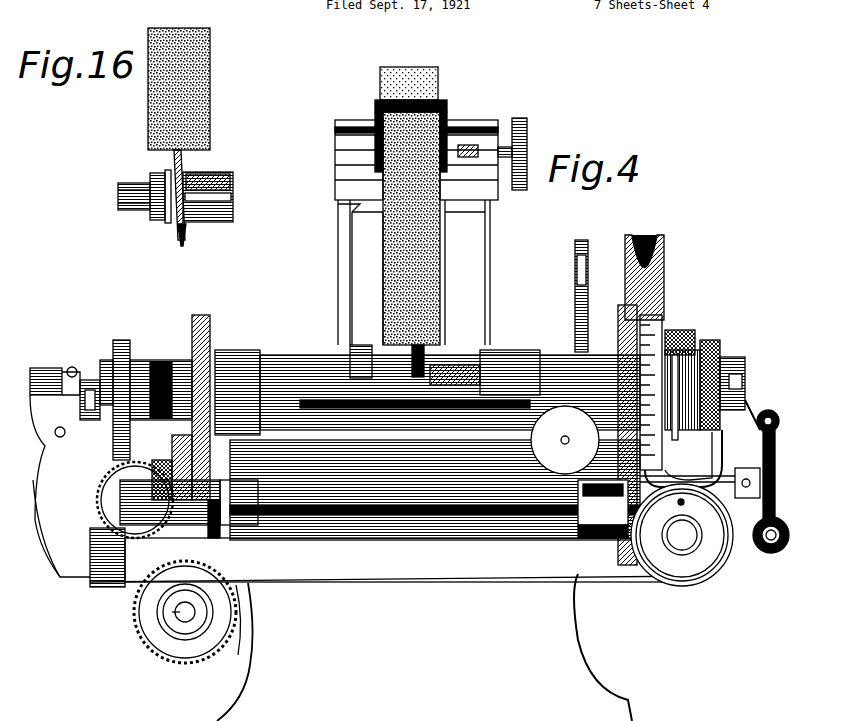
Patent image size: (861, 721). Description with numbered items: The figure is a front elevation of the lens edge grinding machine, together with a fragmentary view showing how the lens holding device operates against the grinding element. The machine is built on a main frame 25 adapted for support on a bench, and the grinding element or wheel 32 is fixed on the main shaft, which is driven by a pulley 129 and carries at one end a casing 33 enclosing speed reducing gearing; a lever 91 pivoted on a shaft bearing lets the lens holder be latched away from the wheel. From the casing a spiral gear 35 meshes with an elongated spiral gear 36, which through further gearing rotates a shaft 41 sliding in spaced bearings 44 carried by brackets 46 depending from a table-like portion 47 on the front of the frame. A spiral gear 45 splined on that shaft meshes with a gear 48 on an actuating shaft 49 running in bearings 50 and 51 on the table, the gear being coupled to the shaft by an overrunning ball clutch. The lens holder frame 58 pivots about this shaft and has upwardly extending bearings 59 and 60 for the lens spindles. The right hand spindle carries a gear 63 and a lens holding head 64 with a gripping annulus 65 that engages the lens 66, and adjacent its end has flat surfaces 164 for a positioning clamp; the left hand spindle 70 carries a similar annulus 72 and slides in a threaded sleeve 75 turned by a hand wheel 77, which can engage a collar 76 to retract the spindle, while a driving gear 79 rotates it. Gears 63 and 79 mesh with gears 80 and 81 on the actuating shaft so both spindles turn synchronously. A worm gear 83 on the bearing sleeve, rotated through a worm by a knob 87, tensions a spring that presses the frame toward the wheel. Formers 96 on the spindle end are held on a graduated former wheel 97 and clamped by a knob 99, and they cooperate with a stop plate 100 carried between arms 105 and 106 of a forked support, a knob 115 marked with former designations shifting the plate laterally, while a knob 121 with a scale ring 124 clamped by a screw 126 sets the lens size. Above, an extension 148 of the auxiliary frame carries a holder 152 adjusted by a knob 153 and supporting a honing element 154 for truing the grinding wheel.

In FIG. 4, the main frame 25 is at (598, 655).
In FIG. 16, the grinding element or wheel 32 is at (211, 94).
In FIG. 4, the grinding element or wheel 32 is at (436, 313).
In FIG. 4, the casing 33 is at (56, 368).
In FIG. 4, the spiral gear 35 is at (106, 478).
In FIG. 4, the elongated spiral gear 36 is at (100, 565).
In FIG. 4, the shaft 41 is at (185, 618).
In FIG. 4, the bearings 44 is at (165, 626).
In FIG. 4, the spiral gear 45 is at (140, 622).
In FIG. 4, the brackets 46 is at (236, 628).
In FIG. 4, the table-like portion 47 is at (307, 560).
In FIG. 4, the gear 48 is at (172, 450).
In FIG. 4, the actuating shaft 49 is at (760, 555).
In FIG. 4, the bearing 50 is at (189, 502).
In FIG. 4, the bearing 51 is at (610, 522).
In FIG. 4, the lens holder frame or carriage 58 is at (425, 535).
In FIG. 4, the bearing 59 is at (535, 355).
In FIG. 4, the bearing 60 is at (262, 358).
In FIG. 4, the gear 63 is at (618, 314).
In FIG. 16, the lens holding face plate or head 64 is at (233, 176).
In FIG. 16, the annulus 65 is at (185, 166).
In FIG. 16, the lens 66 is at (180, 236).
In FIG. 4, the lens 66 is at (428, 352).
In FIG. 16, the lens holding spindle 70 is at (118, 200).
In FIG. 4, the lens holding spindle 70 is at (362, 346).
In FIG. 16, the lens gripping annulus 72 is at (165, 174).
In FIG. 4, the sleeve 75 is at (167, 373).
In FIG. 4, the collar 76 is at (99, 380).
In FIG. 4, the hand piece or wheel 77 is at (128, 342).
In FIG. 4, the driving gear 79 is at (209, 320).
In FIG. 4, the gear 80 is at (657, 478).
In FIG. 4, the gear 81 is at (216, 536).
In FIG. 4, the worm gear 83 is at (603, 502).
In FIG. 4, the finger piece or knob 87 is at (565, 440).
In FIG. 4, the lever 91 is at (586, 241).
In FIG. 4, the formers or templet plates 96 is at (700, 356).
In FIG. 4, the graduated dial 97 is at (663, 326).
In FIG. 4, the knob 99 is at (722, 361).
In FIG. 4, the stop plate 100 is at (698, 341).
In FIG. 4, the arm 105 is at (755, 430).
In FIG. 4, the arm 106 is at (680, 430).
In FIG. 4, the knob 115 is at (746, 386).
In FIG. 4, the hand piece or knob 121 is at (685, 582).
In FIG. 4, the ring 124 is at (726, 570).
In FIG. 4, the screw 126 is at (679, 503).
In FIG. 4, the pulley 129 is at (665, 280).
In FIG. 4, the rearward and upward extension of auxiliary frames 148 is at (490, 272).
In FIG. 4, the holder 152 is at (447, 110).
In FIG. 4, the knob 153 is at (520, 118).
In FIG. 4, the honing element 154 is at (438, 75).
In FIG. 16, the flat surfaces 164 is at (262, 243).
In FIG. 4, the flat surfaces 164 is at (466, 358).